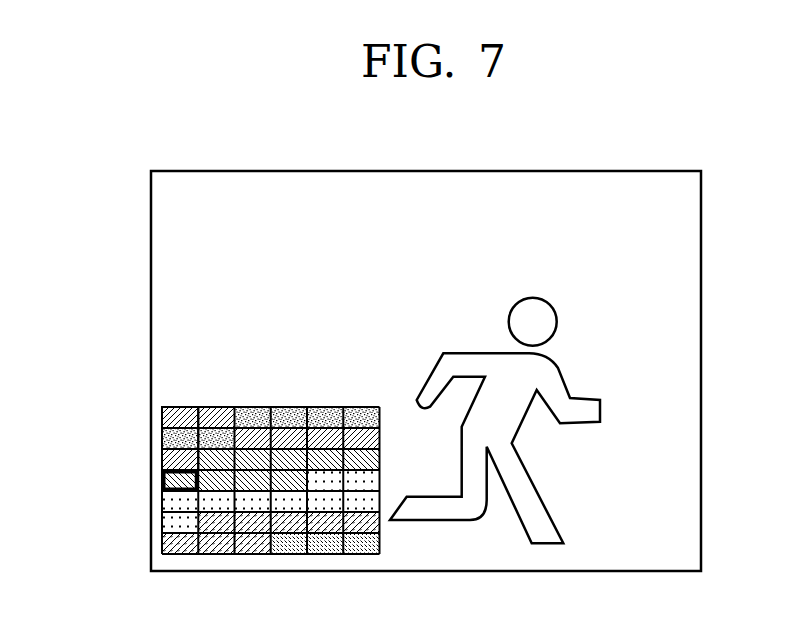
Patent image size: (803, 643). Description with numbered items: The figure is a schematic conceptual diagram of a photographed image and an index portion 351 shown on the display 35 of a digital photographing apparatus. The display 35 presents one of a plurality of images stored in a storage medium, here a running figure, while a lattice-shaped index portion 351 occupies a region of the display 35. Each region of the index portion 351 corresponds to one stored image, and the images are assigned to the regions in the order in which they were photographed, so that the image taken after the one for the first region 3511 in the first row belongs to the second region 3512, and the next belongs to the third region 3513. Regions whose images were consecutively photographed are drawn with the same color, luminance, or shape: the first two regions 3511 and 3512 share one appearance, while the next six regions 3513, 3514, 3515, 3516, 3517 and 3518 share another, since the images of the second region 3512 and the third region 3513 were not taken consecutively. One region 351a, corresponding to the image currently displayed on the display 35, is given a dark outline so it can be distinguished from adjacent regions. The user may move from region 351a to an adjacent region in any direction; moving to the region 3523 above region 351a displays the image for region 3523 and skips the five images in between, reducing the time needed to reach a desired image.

The display 35 is at (669, 157).
The index portion 351 is at (236, 463).
The region corresponding to the displayed image 351a is at (163, 484).
The first region 3511 is at (187, 410).
The second region 3512 is at (218, 410).
The third region 3513 is at (257, 410).
The fourth region 3514 is at (292, 410).
The fifth region 3515 is at (330, 410).
The sixth region 3516 is at (367, 410).
The seventh region 3517 is at (163, 421).
The eighth region 3518 is at (163, 440).
The region above the selected region 3523 is at (163, 460).